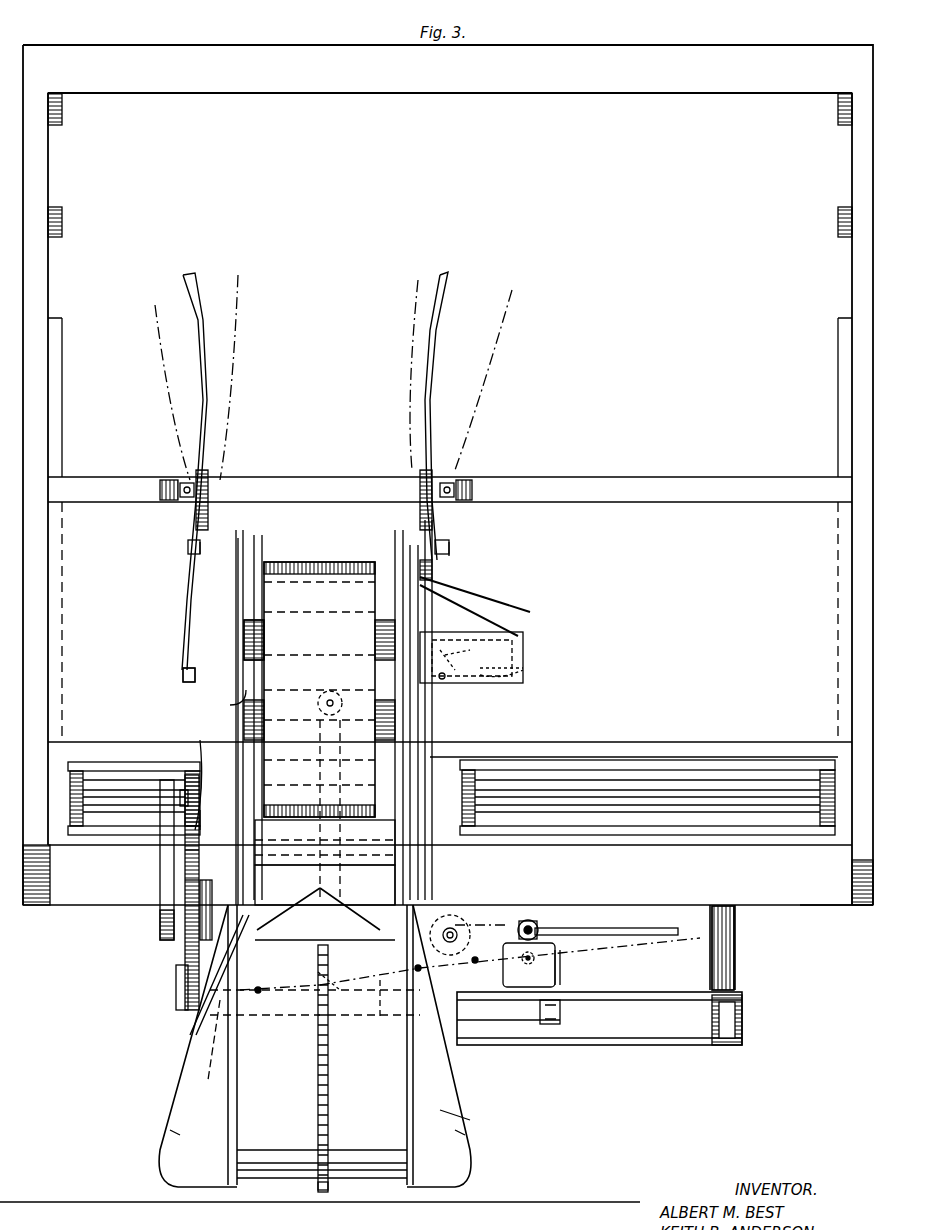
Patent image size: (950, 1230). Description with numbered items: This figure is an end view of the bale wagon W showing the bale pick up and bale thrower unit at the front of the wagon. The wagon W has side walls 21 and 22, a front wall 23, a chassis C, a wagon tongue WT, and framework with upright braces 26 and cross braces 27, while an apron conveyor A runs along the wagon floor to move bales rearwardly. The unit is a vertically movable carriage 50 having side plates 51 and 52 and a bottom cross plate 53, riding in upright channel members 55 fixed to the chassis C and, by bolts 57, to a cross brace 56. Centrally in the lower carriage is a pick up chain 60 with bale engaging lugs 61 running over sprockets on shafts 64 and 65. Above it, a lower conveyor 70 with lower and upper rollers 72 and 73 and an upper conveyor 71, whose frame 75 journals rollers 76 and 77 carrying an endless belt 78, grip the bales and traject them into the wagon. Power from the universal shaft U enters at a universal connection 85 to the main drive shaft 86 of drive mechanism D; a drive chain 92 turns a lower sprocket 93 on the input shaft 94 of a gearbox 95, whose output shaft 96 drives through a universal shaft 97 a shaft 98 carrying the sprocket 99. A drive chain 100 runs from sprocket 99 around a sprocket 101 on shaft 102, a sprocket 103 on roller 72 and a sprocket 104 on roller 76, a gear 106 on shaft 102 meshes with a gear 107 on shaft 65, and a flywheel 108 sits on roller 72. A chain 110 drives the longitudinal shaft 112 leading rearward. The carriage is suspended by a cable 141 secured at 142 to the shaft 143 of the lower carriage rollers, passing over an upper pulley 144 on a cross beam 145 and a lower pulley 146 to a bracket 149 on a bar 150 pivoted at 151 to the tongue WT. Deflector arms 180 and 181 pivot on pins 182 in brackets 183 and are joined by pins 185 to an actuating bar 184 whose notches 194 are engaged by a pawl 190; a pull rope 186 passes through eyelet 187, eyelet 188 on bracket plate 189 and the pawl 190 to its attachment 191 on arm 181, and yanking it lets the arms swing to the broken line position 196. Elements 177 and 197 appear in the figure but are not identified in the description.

The side wall 21 is at (62, 408).
The side wall 22 is at (838, 392).
The front wall 23 is at (765, 542).
The upright braces 26 is at (48, 266).
The cross braces 27 is at (772, 905).
The carriage 50 is at (470, 1102).
The side plate 51 is at (225, 546).
The side plate 52 is at (414, 544).
The bottom cross plate 53 is at (293, 1086).
The channel members 55 is at (213, 500).
The cross brace 56 is at (342, 477).
The bolts 57 is at (186, 483).
The chain 60 is at (330, 1063).
The bale engaging lugs 61 is at (322, 1195).
The shaft 64 is at (278, 1160).
The shaft 65 is at (400, 920).
The lower conveyor 70 is at (322, 612).
The upper conveyor 71 is at (305, 560).
The lower roller 72 is at (395, 848).
The upper roller 73 is at (254, 630).
The frame 75 is at (428, 712).
The lower roller 76 is at (236, 775).
The upper roller 77 is at (258, 560).
The endless belt 78 is at (338, 644).
The universal connection 85 is at (538, 925).
The main drive shaft 86 is at (528, 921).
The drive chain 92 is at (555, 948).
The lower sprocket 93 is at (580, 996).
The input shaft 94 is at (534, 958).
The gearbox 95 is at (560, 975).
The output shaft 96 is at (485, 968).
The universal shaft 97 is at (382, 1022).
The shaft 98 is at (278, 1015).
The sprocket 99 is at (190, 1018).
The drive chain 100 is at (190, 956).
The sprocket 101 is at (185, 856).
The shaft 102 is at (185, 895).
The sprocket 103 is at (180, 800).
The sprocket 104 is at (192, 738).
The gear 106 is at (236, 878).
The gear 107 is at (200, 930).
The flywheel 108 is at (160, 922).
The chain 110 is at (485, 915).
The longitudinal shaft 112 is at (458, 935).
The cable 141 is at (320, 736).
The securing points 142 is at (250, 963).
The shaft 143 is at (278, 962).
The upper pulley 144 is at (326, 696).
The cross beam 145 is at (246, 692).
The second lower pulley 146 is at (343, 1015).
The bracket 149 is at (210, 1072).
The bar 150 is at (515, 1022).
The pivot connection 151 is at (550, 1030).
The leg 177 is at (180, 1136).
The deflector arm 180 is at (196, 280).
The deflector arm 181 is at (446, 296).
The pins 182 is at (188, 547).
The brackets 183 is at (200, 546).
The actuating bar 184 is at (188, 670).
The pins 185 is at (183, 675).
The pull rope 186 is at (507, 605).
The eyelet 187 is at (436, 565).
The eyelet 188 is at (523, 645).
The bracket plate 189 is at (524, 660).
The pawl 190 is at (500, 632).
The attachment point 191 is at (443, 650).
The notches 194 is at (524, 672).
The broken lines 196 is at (245, 328).
The arm position 197 is at (150, 318).
The apron conveyor A is at (682, 755).
The chassis C is at (735, 972).
The drive mechanism D is at (140, 937).
The universal power shaft U is at (648, 935).
The bale loading and unloading wagon W is at (806, 908).
The wagon tongue WT is at (680, 1048).